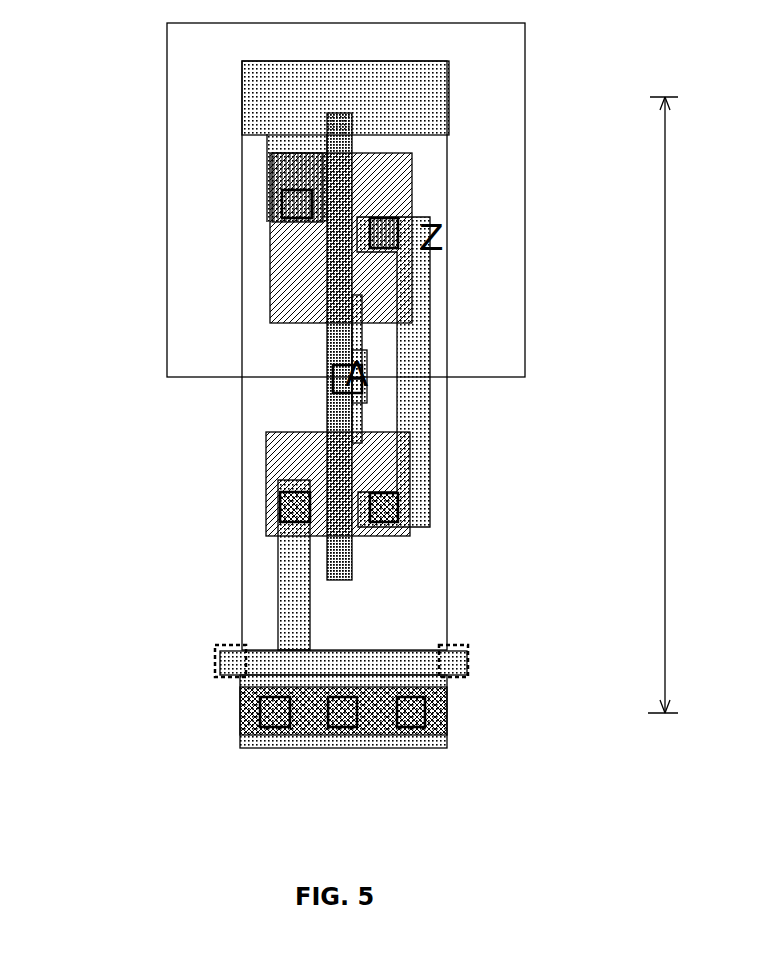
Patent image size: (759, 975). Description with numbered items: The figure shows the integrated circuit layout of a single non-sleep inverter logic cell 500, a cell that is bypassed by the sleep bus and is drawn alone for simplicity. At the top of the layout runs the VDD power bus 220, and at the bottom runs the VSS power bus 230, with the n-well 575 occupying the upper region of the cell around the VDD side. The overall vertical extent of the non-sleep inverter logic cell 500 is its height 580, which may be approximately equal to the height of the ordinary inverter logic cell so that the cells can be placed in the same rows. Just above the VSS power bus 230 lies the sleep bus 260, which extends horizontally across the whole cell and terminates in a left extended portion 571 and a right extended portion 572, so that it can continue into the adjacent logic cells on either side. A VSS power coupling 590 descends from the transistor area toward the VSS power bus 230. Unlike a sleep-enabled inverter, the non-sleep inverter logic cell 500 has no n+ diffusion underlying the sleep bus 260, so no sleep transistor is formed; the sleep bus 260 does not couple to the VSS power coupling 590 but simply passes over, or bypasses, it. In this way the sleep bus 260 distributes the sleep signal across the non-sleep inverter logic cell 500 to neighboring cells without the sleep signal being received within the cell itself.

The non-sleep inverter logic cell 500 is at (57, 56).
The VDD power bus 220 is at (449, 83).
The n-well 575 is at (525, 118).
The height 580 is at (665, 263).
The VSS power coupling 590 is at (278, 580).
The sleep bus 260 is at (418, 650).
The left extended portion of sleep bus 571 is at (215, 645).
The right extended portion of sleep bus 572 is at (469, 645).
The VSS power bus 230 is at (447, 728).